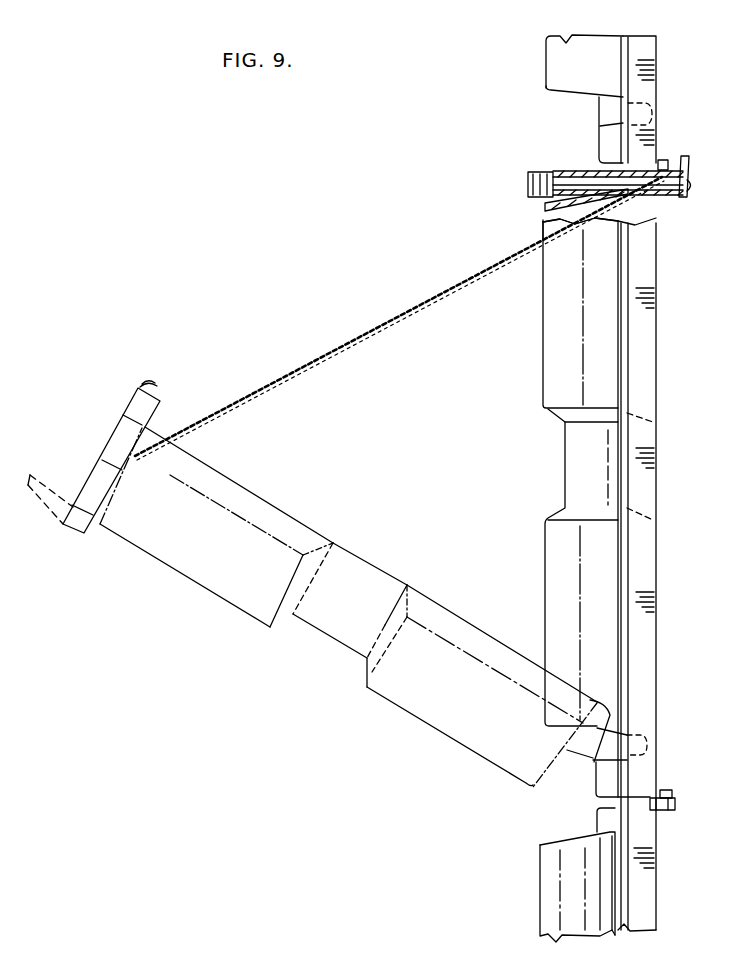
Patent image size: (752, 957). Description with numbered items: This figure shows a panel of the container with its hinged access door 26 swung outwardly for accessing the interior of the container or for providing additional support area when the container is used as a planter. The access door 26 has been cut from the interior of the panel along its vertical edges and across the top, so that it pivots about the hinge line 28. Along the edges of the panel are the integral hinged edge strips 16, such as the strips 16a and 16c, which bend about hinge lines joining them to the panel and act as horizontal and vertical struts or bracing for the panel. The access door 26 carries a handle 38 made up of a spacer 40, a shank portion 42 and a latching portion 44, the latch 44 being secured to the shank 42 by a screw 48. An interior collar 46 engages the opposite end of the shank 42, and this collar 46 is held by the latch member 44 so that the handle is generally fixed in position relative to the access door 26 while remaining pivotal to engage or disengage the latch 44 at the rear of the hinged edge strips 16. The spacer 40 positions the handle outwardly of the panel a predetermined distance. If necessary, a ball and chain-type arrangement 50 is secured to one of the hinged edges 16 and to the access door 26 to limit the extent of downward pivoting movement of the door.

The hinged edge strip 16 is at (667, 160).
The hinged edge strip 16a is at (672, 812).
The hinged edge strip 16c is at (671, 790).
The hinged access door 26 is at (400, 696).
The hinge line 28 is at (597, 762).
The handle 38 is at (92, 455).
The spacer 40 is at (567, 171).
The shank portion 42 is at (548, 207).
The latching portion 44 is at (165, 393).
The interior collar 46 is at (660, 197).
The screw 48 is at (689, 186).
The ball and chain-type arrangement 50 is at (353, 336).